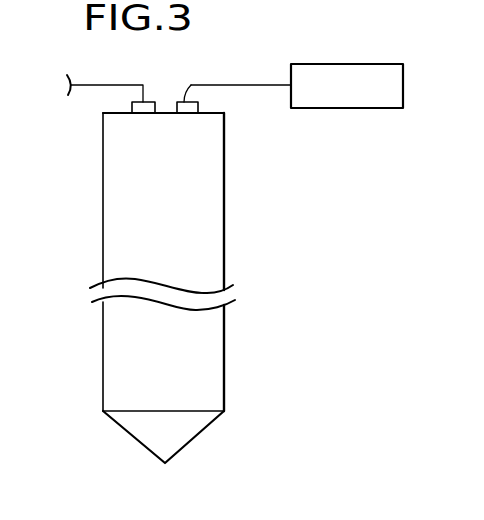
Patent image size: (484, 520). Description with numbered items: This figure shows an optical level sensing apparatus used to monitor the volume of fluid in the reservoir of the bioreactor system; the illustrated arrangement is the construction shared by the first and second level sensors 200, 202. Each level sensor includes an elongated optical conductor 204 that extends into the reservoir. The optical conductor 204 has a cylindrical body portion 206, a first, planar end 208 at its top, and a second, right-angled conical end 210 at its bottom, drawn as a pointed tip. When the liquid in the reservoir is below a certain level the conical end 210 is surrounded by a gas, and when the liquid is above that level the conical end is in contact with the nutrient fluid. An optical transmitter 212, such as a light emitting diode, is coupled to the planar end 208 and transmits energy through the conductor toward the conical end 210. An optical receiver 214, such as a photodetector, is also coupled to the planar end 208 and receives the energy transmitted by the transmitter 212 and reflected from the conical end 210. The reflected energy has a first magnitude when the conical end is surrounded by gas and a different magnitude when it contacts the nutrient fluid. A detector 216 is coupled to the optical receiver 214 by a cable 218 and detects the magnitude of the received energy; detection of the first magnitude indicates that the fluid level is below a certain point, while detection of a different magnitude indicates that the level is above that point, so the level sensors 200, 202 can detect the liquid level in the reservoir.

The first level sensor 200 is at (226, 248).
The second level sensor 202 is at (305, 247).
The elongated optical conductor 204 is at (250, 195).
The cylindrical body portion 206 is at (224, 242).
The first, planar end 208 is at (118, 114).
The second, right-angled conical end 210 is at (190, 442).
The optical transmitter 212 is at (148, 102).
The optical receiver 214 is at (191, 85).
The detector 216 is at (322, 108).
The cable 218 is at (262, 85).